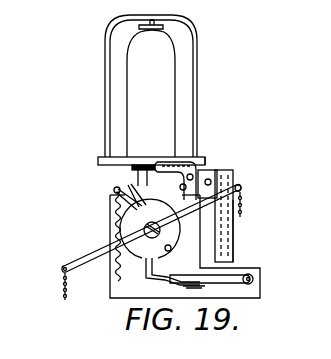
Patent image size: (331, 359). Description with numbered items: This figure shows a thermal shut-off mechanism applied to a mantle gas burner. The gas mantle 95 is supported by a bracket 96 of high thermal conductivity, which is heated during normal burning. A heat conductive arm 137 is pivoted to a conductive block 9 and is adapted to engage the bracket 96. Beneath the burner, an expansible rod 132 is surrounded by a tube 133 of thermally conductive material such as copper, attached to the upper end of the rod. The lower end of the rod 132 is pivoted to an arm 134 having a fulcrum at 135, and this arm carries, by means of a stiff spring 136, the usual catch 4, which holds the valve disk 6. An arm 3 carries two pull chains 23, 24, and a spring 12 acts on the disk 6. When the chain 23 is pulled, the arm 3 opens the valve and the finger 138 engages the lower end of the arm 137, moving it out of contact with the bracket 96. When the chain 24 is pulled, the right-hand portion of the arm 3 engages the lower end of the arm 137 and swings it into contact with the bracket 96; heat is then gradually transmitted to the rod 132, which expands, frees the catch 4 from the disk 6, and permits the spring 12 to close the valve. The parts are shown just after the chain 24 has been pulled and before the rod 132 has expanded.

The gas mantle 95 is at (151, 88).
The bracket 96 is at (205, 160).
The heat conductive arm 137 is at (196, 190).
The conductive block 9 is at (214, 178).
The pull chain 23 is at (243, 193).
The expansible rod 132 is at (229, 238).
The tube 133 is at (234, 252).
The arm 134 is at (242, 275).
The fulcrum 135 is at (254, 279).
The stiff spring 136 is at (205, 287).
The spring 12 is at (112, 211).
The finger 138 is at (167, 206).
The arm 3 is at (90, 257).
The disk 6 is at (150, 228).
The catch 4 is at (147, 271).
The pull chain 24 is at (63, 291).